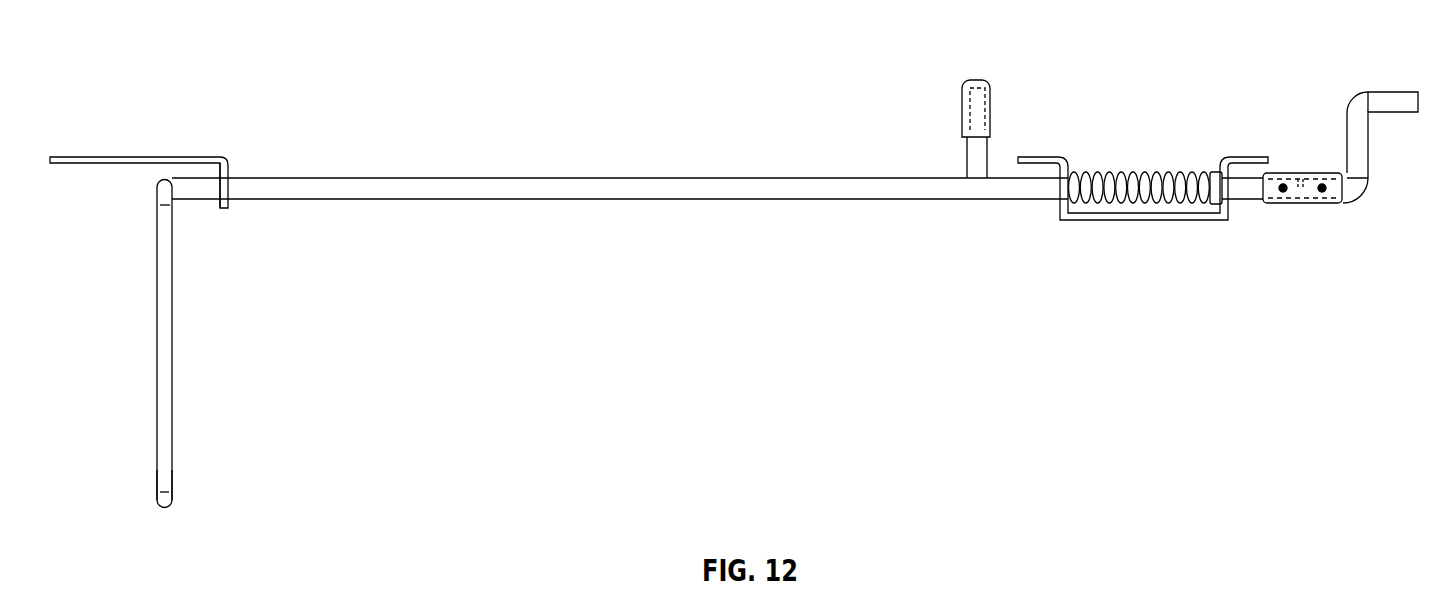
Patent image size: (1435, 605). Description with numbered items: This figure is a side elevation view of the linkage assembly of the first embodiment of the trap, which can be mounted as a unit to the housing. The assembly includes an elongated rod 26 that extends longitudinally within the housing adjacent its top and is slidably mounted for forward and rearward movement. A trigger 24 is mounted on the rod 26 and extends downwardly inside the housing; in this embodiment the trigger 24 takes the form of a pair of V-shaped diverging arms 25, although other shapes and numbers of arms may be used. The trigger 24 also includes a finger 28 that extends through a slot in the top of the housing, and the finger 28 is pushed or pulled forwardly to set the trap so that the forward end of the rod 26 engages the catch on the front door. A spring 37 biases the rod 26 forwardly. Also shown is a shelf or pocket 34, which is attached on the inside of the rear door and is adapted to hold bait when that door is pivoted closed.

The trigger 24 is at (163, 453).
The diverging arms 25 is at (172, 342).
The elongated rod 26 is at (556, 178).
The finger 28 is at (975, 87).
The shelf or pocket 34 is at (1138, 222).
The spring 37 is at (1118, 170).